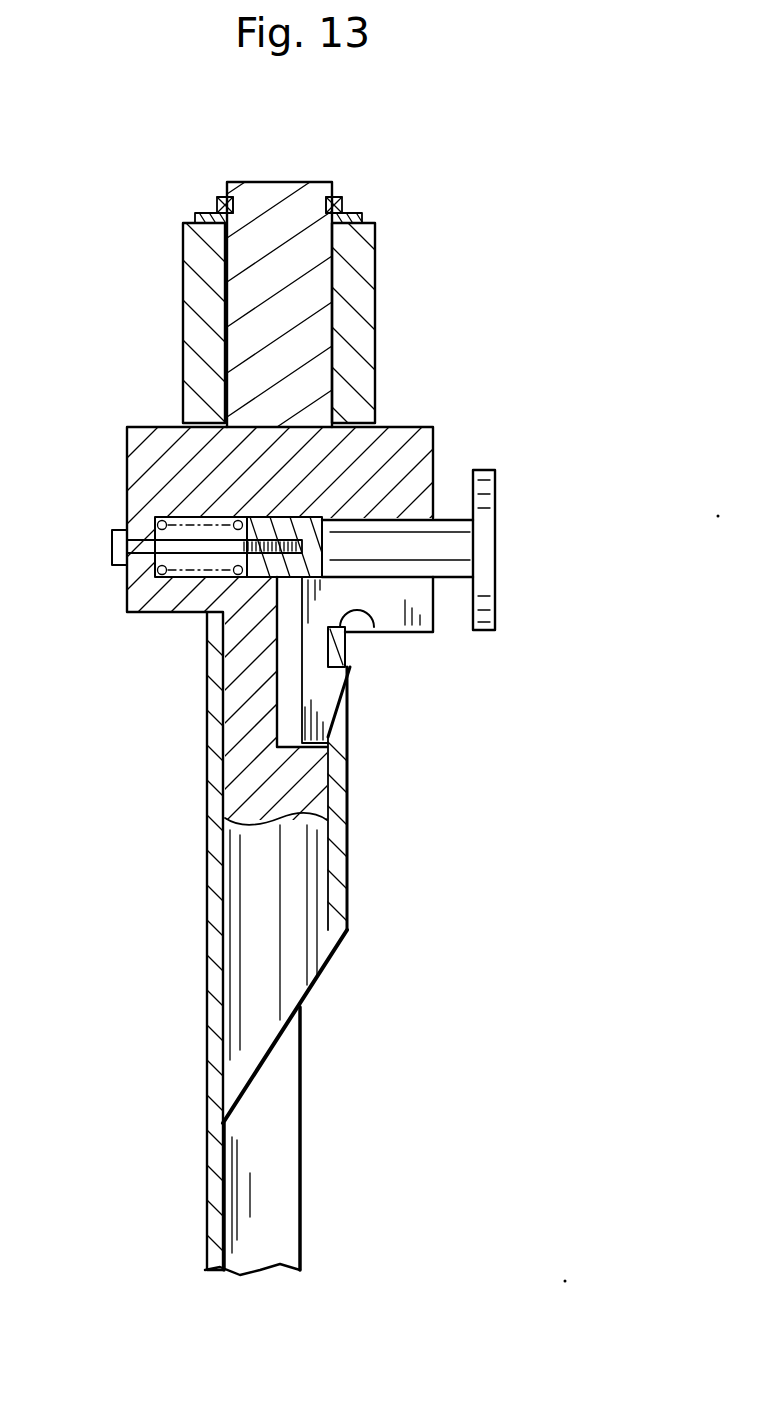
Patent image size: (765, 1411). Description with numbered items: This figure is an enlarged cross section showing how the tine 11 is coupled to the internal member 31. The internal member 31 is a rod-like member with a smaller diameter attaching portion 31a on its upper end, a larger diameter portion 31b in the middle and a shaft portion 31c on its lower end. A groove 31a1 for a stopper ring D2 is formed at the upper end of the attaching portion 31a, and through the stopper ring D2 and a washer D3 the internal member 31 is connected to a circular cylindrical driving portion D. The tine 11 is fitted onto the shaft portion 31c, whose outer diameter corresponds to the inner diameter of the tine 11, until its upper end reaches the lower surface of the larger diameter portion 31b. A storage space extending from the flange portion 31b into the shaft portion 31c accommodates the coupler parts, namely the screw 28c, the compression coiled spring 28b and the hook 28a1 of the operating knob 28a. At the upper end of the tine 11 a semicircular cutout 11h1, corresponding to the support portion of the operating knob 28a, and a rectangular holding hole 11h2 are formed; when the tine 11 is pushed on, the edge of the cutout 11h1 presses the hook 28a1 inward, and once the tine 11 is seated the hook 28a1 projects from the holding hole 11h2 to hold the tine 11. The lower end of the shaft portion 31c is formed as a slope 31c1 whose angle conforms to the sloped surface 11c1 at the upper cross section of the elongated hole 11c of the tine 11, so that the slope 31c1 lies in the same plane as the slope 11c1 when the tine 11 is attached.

The internal member 31 is at (413, 422).
The attaching portion 31a is at (285, 200).
The groove 31a1 is at (327, 202).
The larger diameter portion 31b is at (143, 453).
The shaft portion 31c is at (243, 942).
The slope 31c1 is at (265, 1063).
The circular cylindrical driving portion D is at (365, 305).
The stopper ring D2 is at (342, 205).
The washer D3 is at (362, 218).
The operating knob 28a is at (497, 488).
The hook 28a1 is at (355, 660).
The compression coiled spring 28b is at (182, 517).
The screw 28c is at (113, 540).
The tine 11 is at (350, 828).
The semicircular cutout 11h1 is at (378, 630).
The rectangular holding hole 11h2 is at (350, 718).
The elongated hole 11c is at (290, 1158).
The sloped surface 11c1 is at (335, 955).